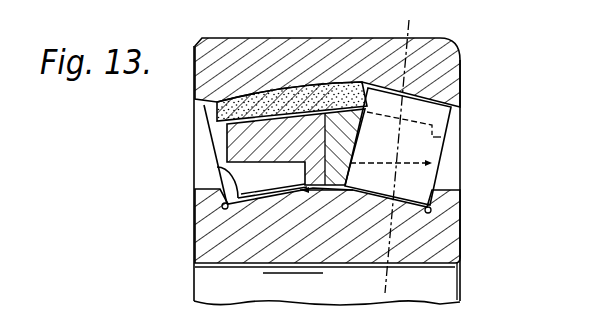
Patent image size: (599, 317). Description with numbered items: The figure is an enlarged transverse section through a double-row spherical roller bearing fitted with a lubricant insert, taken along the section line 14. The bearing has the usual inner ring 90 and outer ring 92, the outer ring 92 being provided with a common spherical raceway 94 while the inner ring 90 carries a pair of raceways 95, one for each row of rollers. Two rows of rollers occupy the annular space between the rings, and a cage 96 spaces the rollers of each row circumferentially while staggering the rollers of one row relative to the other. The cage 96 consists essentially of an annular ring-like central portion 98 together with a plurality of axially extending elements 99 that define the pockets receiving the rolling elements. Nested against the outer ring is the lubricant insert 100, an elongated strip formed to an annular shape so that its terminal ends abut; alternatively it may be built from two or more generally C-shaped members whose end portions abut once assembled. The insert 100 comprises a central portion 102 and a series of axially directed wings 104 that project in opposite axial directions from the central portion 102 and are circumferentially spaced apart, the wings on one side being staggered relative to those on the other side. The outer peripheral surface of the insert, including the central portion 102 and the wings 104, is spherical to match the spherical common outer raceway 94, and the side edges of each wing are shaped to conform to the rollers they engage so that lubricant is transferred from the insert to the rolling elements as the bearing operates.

The section line 14- 14 is at (373, 23).
The inner ring 90 is at (195, 226).
The outer ring 92 is at (208, 80).
The common spherical raceway 94 is at (203, 110).
The raceways 95 is at (233, 200).
The cage 96 is at (227, 140).
The annular ring-like central portion 98 is at (320, 166).
The axially extending elements 99 is at (270, 150).
The lubricant insert 100 is at (308, 84).
The central portion 102 is at (332, 94).
The axially directed wings 104 is at (248, 88).